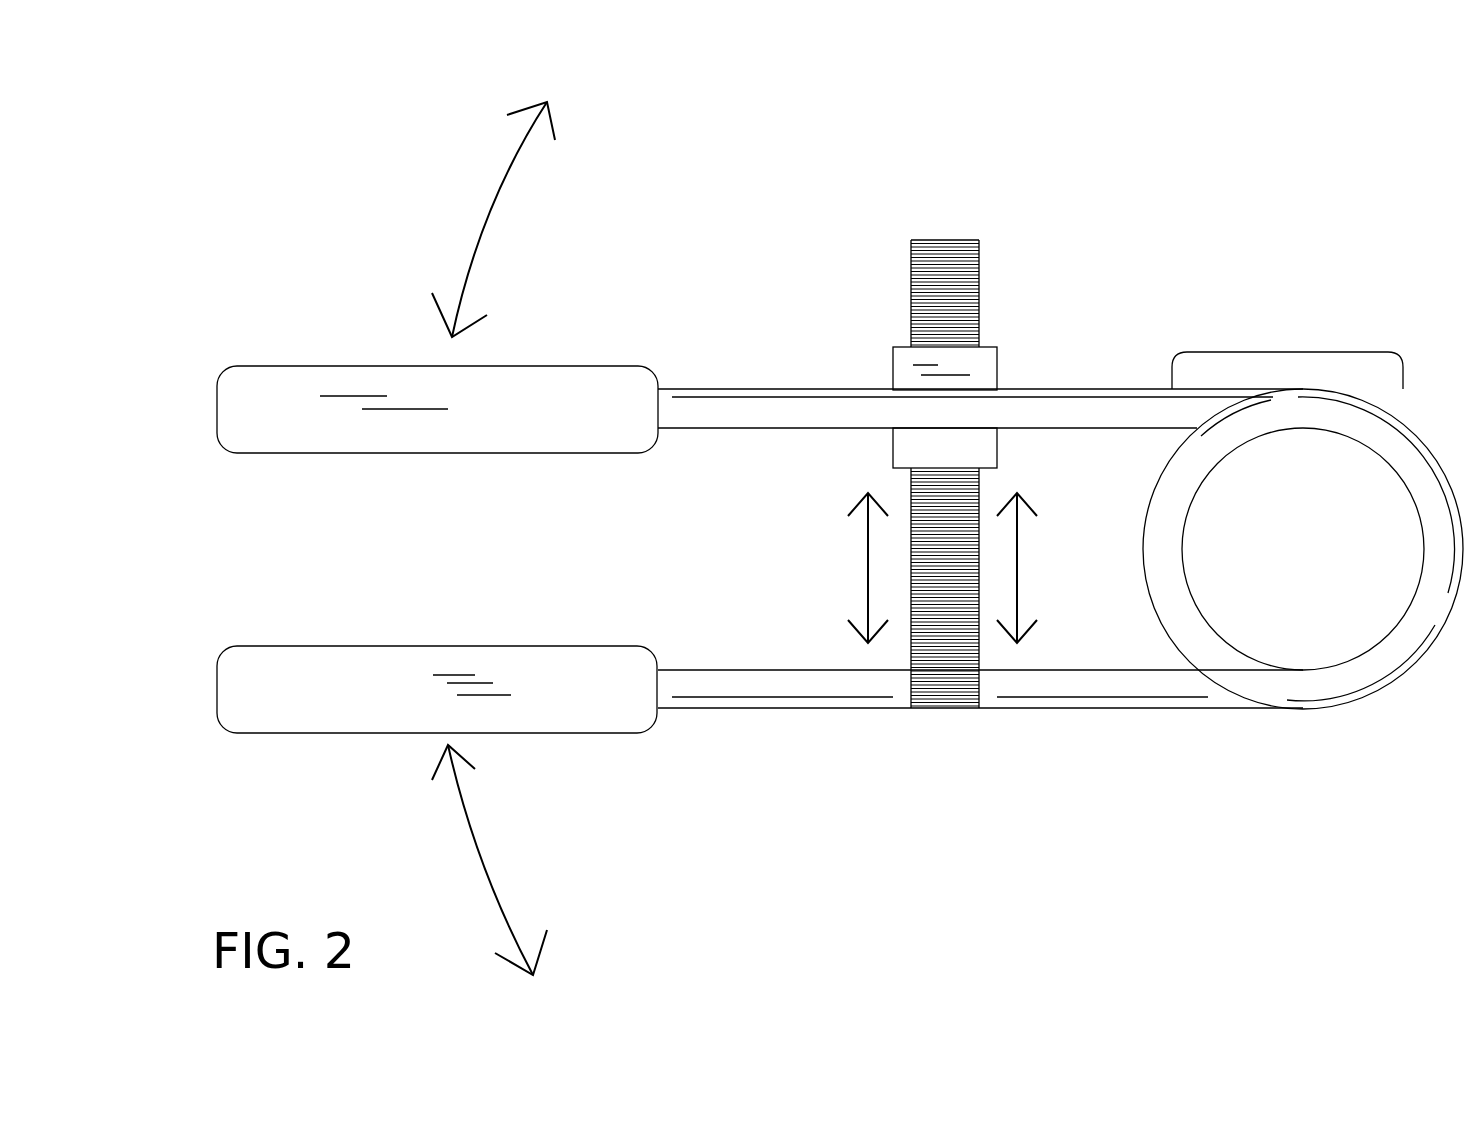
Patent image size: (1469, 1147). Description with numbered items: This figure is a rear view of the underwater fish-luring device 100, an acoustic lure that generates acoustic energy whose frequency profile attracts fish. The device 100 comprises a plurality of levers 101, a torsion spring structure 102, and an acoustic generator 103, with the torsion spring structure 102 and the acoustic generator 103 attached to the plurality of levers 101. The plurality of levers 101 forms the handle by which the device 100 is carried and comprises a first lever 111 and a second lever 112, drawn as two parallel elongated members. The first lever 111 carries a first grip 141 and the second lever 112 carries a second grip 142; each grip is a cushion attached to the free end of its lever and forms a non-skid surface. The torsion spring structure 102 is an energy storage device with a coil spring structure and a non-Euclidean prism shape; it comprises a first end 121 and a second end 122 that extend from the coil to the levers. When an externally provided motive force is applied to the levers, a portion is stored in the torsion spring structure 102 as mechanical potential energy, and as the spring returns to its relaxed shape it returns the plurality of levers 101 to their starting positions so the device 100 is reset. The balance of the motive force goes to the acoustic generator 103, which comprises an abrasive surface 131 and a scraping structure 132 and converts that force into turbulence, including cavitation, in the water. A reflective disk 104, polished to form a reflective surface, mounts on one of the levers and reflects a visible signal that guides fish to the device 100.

The underwater fish-luring device 100 is at (278, 212).
The plurality of levers 101 is at (139, 437).
The torsion spring structure 102 is at (1365, 678).
The acoustic generator 103 is at (928, 193).
The reflective disk 104 is at (1323, 360).
The first lever 111 is at (215, 692).
The second lever 112 is at (215, 410).
The first end 121 is at (1062, 695).
The second end 122 is at (1092, 403).
The abrasive surface 131 is at (980, 258).
The scraping structure 132 is at (985, 367).
The first grip 141 is at (591, 668).
The second grip 142 is at (605, 392).